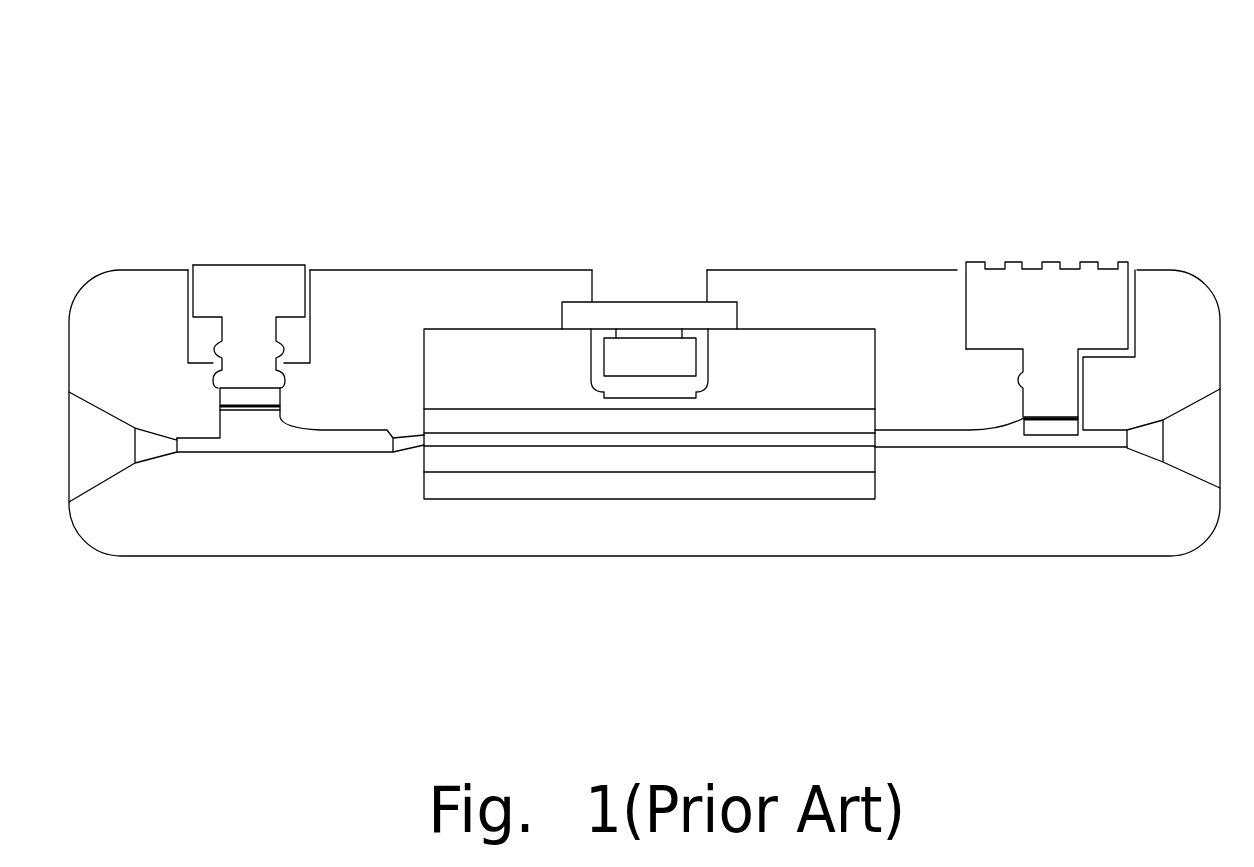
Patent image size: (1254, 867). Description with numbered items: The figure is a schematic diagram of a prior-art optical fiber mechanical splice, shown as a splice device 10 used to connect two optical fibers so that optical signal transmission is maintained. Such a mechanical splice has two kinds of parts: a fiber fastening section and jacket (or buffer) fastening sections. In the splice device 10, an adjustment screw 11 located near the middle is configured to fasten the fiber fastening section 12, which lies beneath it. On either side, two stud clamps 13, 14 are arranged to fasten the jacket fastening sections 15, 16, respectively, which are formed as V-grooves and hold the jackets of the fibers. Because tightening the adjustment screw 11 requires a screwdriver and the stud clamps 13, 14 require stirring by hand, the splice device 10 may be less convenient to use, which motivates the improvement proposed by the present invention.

The splice device 10 is at (982, 138).
The adjustment screw 11 is at (640, 338).
The fiber fastening section 12 is at (755, 460).
The stud clamp 13 is at (1113, 287).
The stud clamp 14 is at (238, 265).
The jacket fastening section 15 is at (942, 447).
The jacket fastening section 16 is at (270, 452).